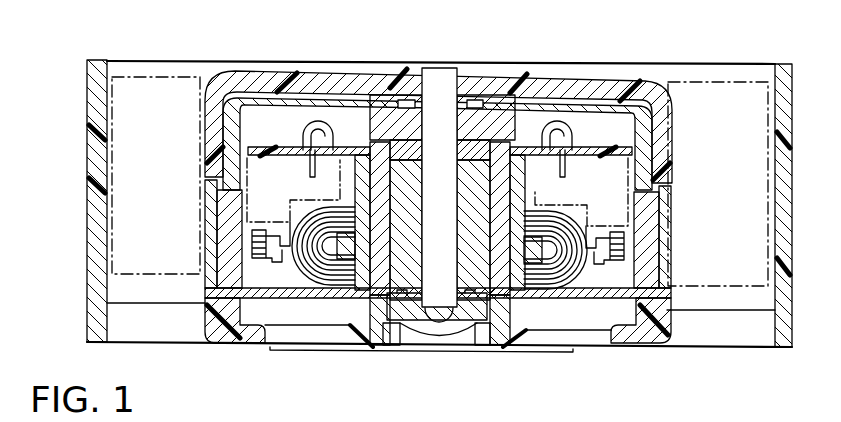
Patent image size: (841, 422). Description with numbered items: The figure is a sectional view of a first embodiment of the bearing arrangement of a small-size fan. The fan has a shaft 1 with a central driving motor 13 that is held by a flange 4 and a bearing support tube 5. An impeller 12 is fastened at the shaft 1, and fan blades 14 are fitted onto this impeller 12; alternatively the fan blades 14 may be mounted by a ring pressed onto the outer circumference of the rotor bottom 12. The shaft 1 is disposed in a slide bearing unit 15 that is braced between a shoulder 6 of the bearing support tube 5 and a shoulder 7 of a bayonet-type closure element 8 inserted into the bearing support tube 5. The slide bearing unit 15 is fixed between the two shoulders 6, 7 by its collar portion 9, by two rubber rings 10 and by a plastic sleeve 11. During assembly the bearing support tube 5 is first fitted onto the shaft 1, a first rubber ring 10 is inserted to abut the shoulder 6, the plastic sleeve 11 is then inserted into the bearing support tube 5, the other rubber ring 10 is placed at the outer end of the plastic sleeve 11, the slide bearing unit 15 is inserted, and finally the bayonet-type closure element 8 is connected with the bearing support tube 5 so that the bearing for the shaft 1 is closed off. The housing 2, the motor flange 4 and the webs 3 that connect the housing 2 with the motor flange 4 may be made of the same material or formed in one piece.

The shaft 1 is at (462, 69).
The housing 2 is at (93, 70).
The webs 3 is at (152, 330).
The flange 4 is at (302, 333).
The bearing support tube 5 is at (534, 86).
The shoulder 6 is at (400, 160).
The shoulder 7 is at (493, 327).
The bayonet-type closure element 8 is at (437, 331).
The collar portion 9 is at (372, 332).
The rubber rings 10 is at (500, 331).
The plastic sleeve 11 is at (395, 125).
The impeller 12 is at (626, 82).
The central driving motor 13 is at (608, 223).
The fan blades 14 is at (752, 117).
The slide bearing unit 15 is at (397, 142).